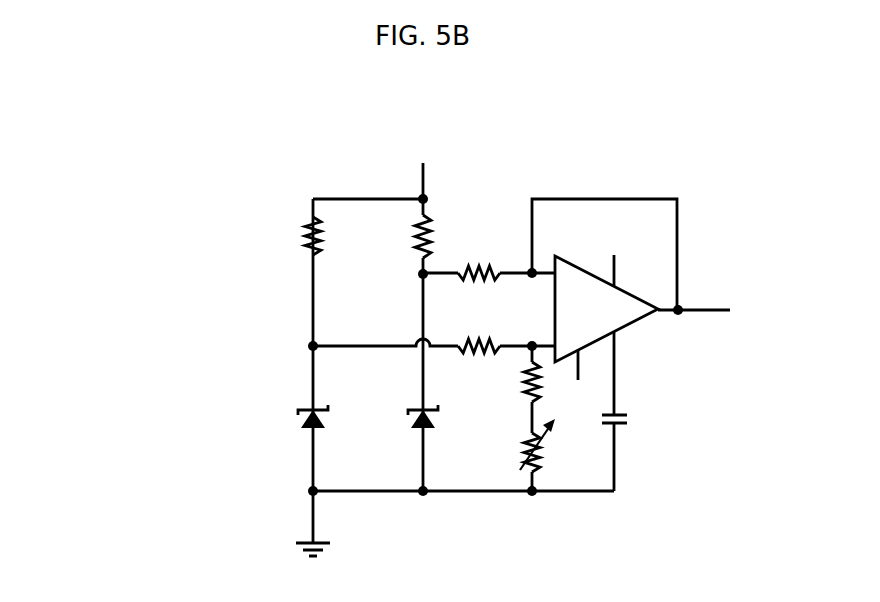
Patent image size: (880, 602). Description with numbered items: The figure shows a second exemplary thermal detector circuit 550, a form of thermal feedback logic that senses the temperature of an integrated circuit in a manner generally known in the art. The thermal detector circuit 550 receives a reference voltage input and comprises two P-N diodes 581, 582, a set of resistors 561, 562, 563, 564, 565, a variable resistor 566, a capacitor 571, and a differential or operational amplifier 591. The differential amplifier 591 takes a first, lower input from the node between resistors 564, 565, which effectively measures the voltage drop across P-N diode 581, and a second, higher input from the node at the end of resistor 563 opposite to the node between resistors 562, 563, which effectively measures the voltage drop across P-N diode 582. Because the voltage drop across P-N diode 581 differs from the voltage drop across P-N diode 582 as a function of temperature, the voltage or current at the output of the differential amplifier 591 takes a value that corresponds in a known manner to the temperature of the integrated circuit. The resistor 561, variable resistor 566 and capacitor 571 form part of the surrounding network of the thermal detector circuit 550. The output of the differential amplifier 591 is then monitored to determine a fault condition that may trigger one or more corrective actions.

The thermal detector circuit 550 is at (198, 129).
The resistor 561 is at (303, 232).
The resistor 562 is at (413, 263).
The resistor 563 is at (470, 265).
The resistor 564 is at (470, 337).
The resistor 565 is at (522, 390).
The variable resistor 566 is at (520, 473).
The capacitor 571 is at (623, 412).
The P-N diode 581 is at (303, 430).
The P-N diode 582 is at (413, 433).
The differential amplifier 591 is at (633, 323).